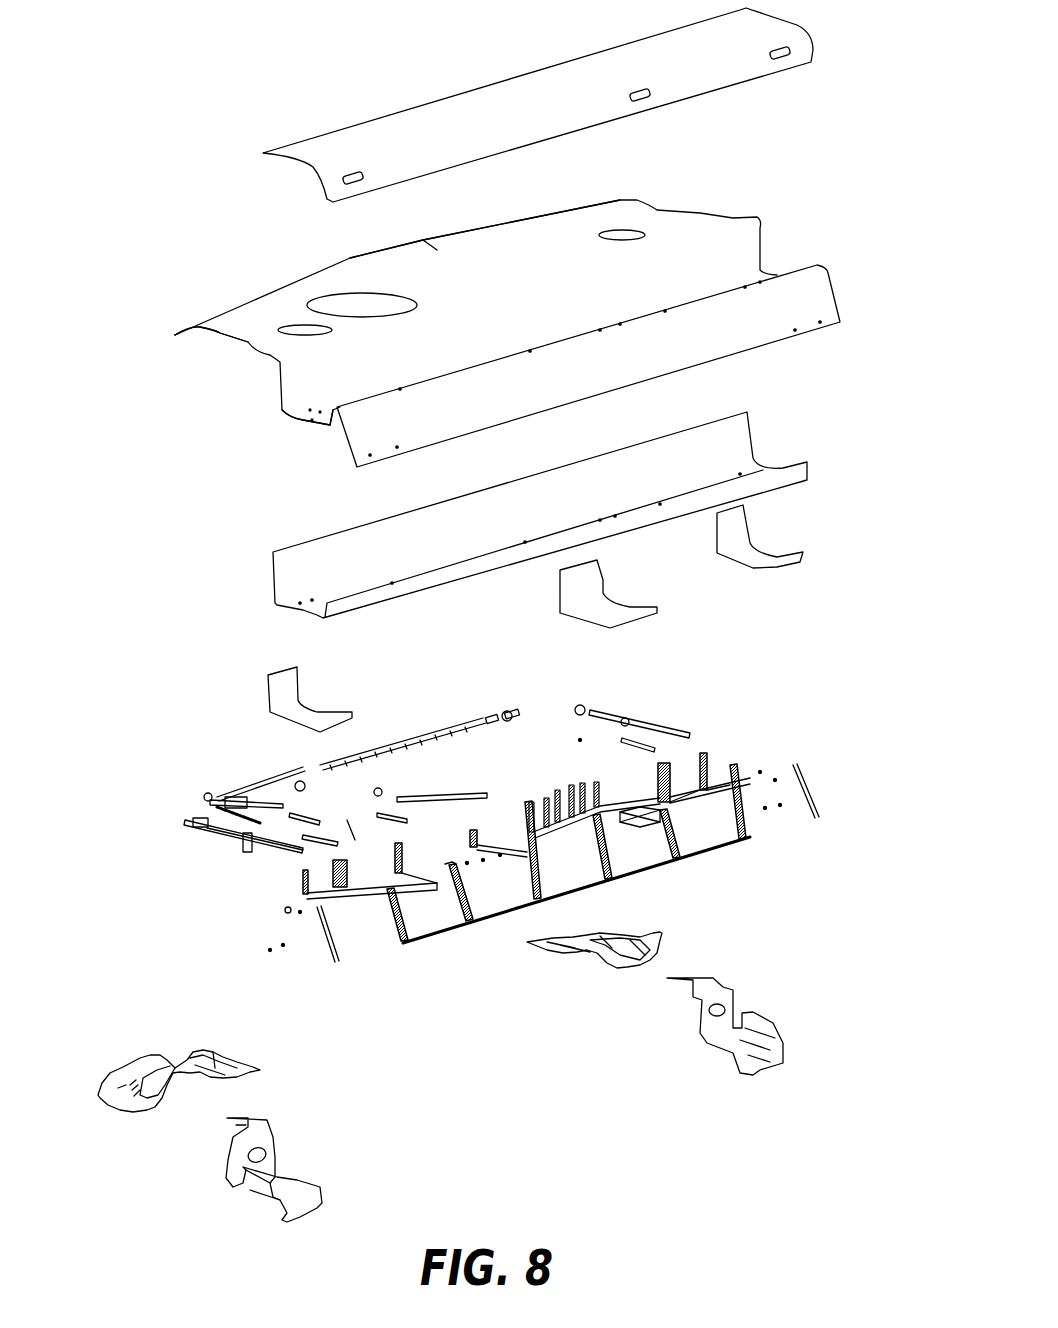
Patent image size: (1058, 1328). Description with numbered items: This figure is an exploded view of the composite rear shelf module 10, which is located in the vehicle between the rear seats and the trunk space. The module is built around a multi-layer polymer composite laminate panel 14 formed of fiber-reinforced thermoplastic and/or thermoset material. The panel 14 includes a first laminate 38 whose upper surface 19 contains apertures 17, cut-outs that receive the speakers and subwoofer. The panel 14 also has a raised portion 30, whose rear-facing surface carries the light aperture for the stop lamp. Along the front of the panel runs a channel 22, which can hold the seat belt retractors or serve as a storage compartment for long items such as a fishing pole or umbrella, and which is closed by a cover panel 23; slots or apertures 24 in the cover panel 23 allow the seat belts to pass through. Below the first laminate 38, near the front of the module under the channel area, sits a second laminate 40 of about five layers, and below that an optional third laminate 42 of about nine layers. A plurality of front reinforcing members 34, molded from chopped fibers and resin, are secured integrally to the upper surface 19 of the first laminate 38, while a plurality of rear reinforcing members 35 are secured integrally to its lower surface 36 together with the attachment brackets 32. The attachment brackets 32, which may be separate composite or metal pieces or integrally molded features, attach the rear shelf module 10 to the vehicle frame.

The rear shelf module 10 is at (128, 818).
The panel 14 is at (500, 298).
The aperture 17 is at (313, 335).
The upper surface 19 is at (561, 238).
The channel 22 is at (327, 393).
The cover panel 23 is at (517, 126).
The apertures 24 is at (356, 175).
The raised portion 30 is at (397, 257).
The attachment brackets 32 is at (667, 932).
The front reinforcing members 34 is at (777, 722).
The rear reinforcing members 35 is at (213, 850).
The lower surface 36 is at (218, 336).
The first laminate 38 is at (807, 298).
The second laminate 40 is at (720, 447).
The third laminate 42 is at (587, 582).